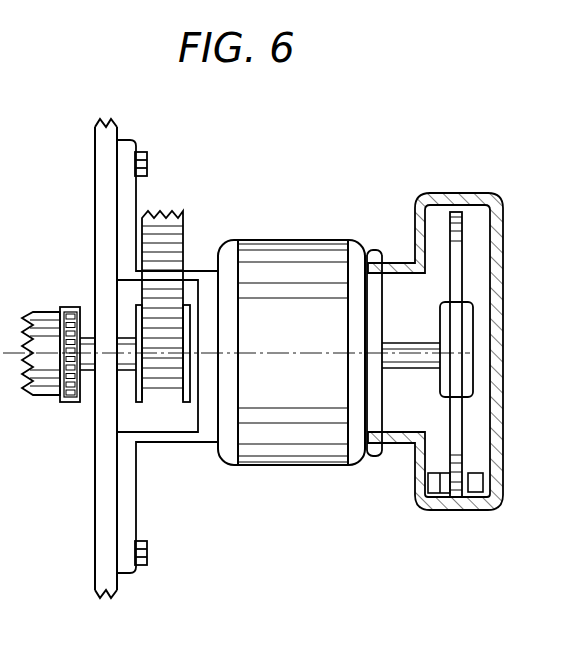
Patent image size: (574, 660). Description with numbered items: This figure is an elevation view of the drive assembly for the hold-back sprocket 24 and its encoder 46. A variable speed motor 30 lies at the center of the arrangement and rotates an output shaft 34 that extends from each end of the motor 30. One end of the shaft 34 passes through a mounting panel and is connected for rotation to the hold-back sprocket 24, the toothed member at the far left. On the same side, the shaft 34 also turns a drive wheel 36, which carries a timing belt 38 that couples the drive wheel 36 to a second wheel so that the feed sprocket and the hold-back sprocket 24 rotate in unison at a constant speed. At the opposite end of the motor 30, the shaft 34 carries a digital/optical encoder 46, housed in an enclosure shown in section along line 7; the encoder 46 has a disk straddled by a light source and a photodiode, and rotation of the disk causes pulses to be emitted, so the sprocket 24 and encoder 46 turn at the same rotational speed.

The hold-back sprocket 24 is at (40, 338).
The timing belt 38 is at (153, 247).
The drive wheel 36 is at (135, 400).
The variable speed motor 30 is at (262, 437).
The output shaft 34 is at (407, 343).
The encoder 46 is at (450, 452).
The section line 7- 7 is at (404, 573).